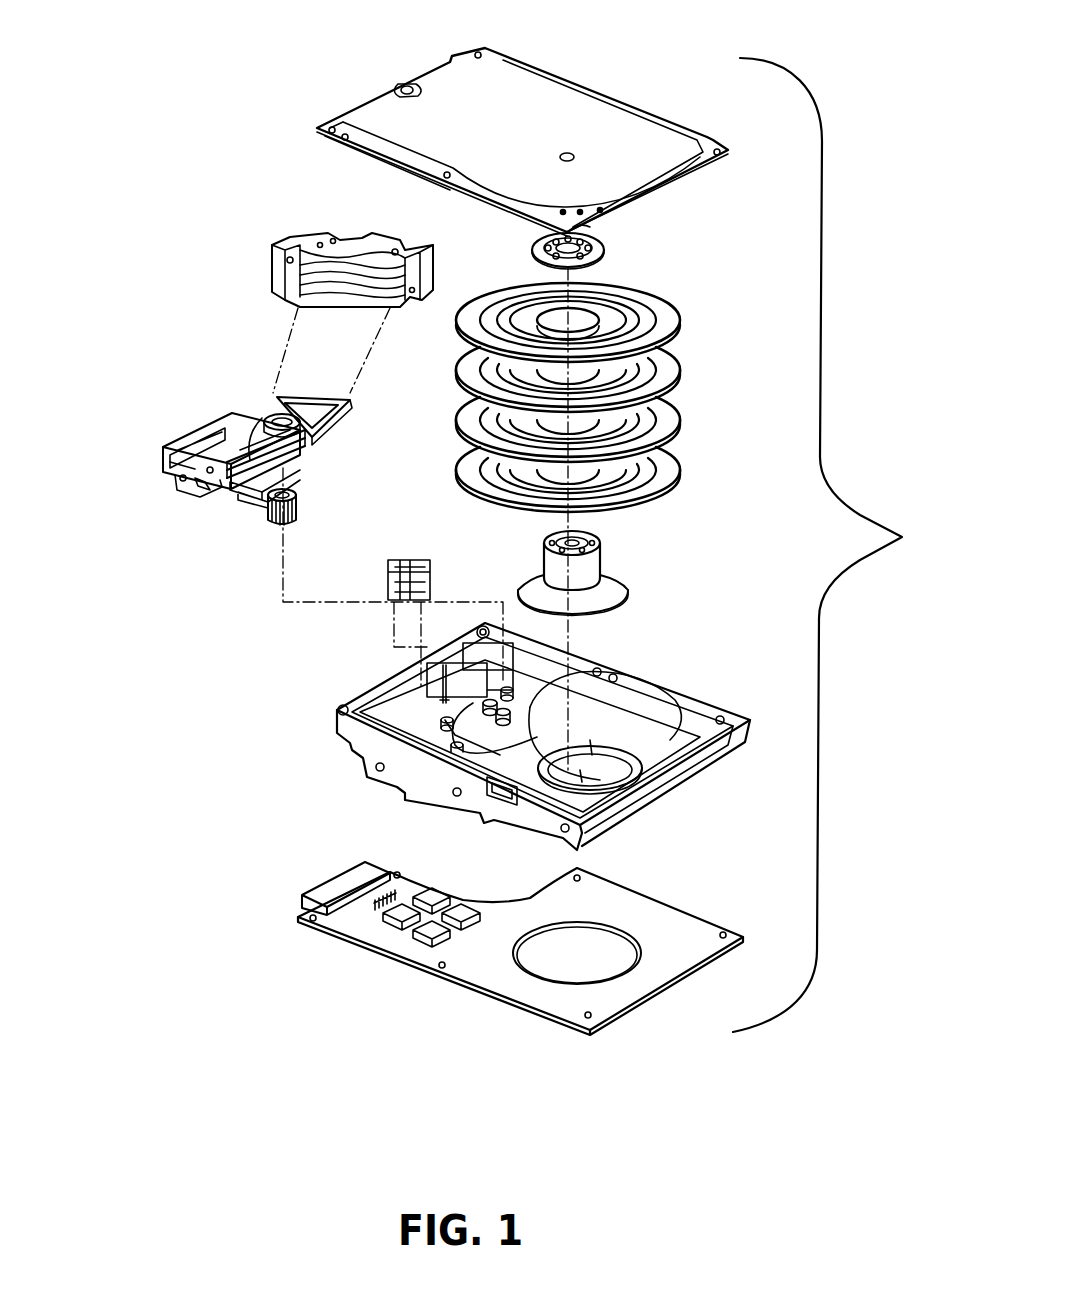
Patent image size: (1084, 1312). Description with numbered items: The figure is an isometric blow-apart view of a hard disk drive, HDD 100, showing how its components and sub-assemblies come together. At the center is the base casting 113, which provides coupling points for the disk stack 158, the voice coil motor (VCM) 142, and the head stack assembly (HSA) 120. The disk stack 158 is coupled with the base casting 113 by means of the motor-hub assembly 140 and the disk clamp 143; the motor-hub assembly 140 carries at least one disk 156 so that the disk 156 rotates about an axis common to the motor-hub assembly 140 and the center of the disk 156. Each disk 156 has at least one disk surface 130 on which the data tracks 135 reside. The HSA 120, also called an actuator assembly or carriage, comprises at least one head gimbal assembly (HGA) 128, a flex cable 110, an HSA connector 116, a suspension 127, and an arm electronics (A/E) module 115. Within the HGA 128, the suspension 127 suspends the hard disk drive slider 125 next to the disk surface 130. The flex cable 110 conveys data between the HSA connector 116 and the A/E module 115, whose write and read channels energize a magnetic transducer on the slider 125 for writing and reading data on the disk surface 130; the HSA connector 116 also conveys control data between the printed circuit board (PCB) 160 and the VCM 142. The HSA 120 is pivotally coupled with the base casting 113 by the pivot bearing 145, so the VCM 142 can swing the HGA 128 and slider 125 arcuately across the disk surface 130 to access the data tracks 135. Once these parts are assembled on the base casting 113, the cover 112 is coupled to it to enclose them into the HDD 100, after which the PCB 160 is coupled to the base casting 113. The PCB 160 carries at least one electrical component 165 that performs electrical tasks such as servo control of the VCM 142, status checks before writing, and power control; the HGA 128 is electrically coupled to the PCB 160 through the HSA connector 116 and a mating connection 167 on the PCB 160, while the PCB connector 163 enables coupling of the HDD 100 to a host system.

The HDD 100 is at (907, 520).
The cover 112 is at (615, 145).
The base casting 113 is at (345, 735).
The head stack assembly 120 is at (204, 461).
The suspension 127 is at (178, 440).
The flex cable 110 is at (240, 427).
The arm electronics module 115 is at (262, 420).
The HSA connector 116 is at (194, 484).
The hard disk drive slider 125 is at (232, 483).
The head gimbal assembly 128 is at (258, 484).
The voice coil motor 142 is at (270, 245).
The disk clamp 143 is at (562, 236).
The pivot bearing 145 is at (280, 585).
The disk surface 130 is at (538, 365).
The data tracks 135 is at (521, 297).
The disk 156 is at (457, 470).
The disk stack 158 is at (574, 366).
The motor-hub assembly 140 is at (628, 578).
The printed circuit board 160 is at (445, 943).
The PCB connector 163 is at (340, 880).
The electrical component 165 is at (440, 950).
The mating connection 167 is at (373, 912).